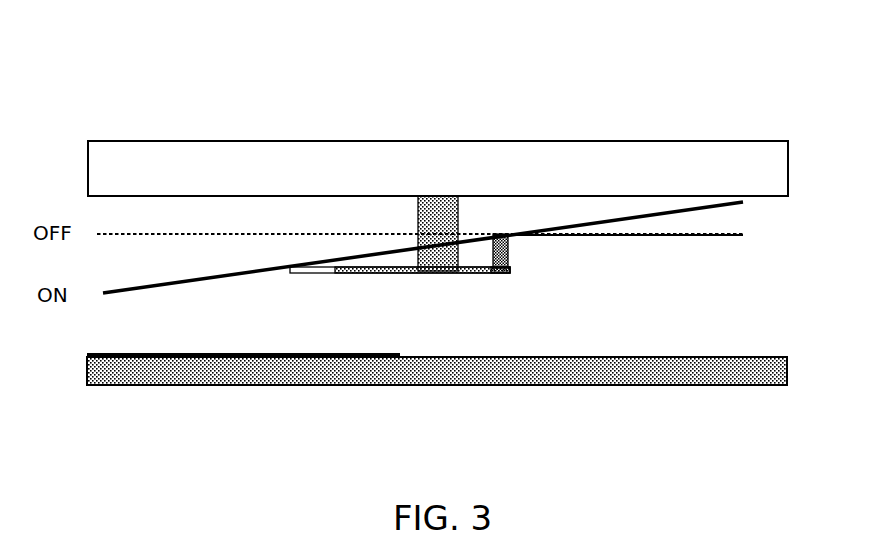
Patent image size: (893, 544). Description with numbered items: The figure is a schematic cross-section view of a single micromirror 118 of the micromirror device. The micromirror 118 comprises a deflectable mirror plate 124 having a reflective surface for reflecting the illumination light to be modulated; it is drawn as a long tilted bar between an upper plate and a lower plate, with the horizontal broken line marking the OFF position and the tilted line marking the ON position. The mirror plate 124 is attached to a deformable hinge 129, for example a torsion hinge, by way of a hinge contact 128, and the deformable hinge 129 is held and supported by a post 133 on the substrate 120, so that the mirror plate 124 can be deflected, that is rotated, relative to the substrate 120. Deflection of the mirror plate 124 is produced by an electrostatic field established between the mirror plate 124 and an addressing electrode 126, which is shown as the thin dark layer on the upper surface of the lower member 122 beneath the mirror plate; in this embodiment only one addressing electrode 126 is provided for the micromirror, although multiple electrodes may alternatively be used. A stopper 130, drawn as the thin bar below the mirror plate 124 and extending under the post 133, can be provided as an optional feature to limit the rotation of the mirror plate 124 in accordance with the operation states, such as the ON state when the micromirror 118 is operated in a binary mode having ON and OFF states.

The micromirror 118 is at (552, 100).
The substrate 120 is at (235, 152).
The substrate 122 is at (438, 378).
The deflectable mirror plate 124 is at (217, 280).
The addressing electrode 126 is at (182, 359).
The hinge contact 128 is at (512, 255).
The deformable hinge 129 is at (497, 273).
The stopper 130 is at (313, 273).
The post 133 is at (440, 210).